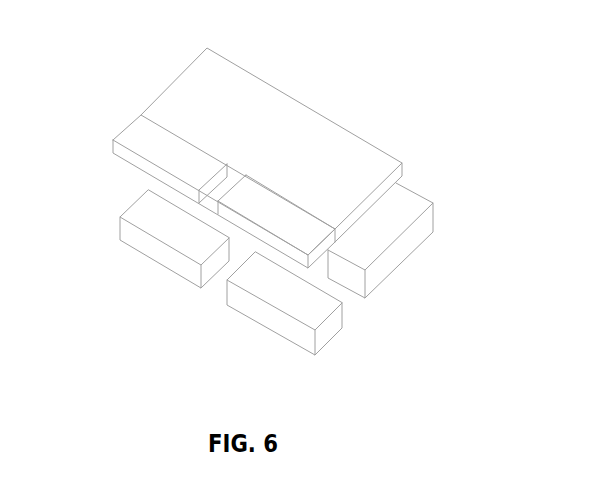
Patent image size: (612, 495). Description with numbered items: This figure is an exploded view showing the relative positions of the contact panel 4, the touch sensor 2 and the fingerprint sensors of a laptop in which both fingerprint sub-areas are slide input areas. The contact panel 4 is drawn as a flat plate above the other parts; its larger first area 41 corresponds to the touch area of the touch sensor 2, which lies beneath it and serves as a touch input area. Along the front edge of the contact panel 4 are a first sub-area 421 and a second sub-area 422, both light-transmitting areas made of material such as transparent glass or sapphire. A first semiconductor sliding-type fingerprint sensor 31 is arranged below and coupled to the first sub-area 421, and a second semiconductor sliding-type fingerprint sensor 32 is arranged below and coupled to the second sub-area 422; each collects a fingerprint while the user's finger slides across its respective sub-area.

The touch sensor 2 is at (407, 242).
The first semiconductor sliding-type fingerprint sensor 31 is at (150, 243).
The second semiconductor sliding-type fingerprint sensor 32 is at (285, 326).
The contact panel 4 is at (238, 178).
The first area 41 is at (288, 120).
The first sub-area 421 is at (142, 140).
The second sub-area 422 is at (303, 235).